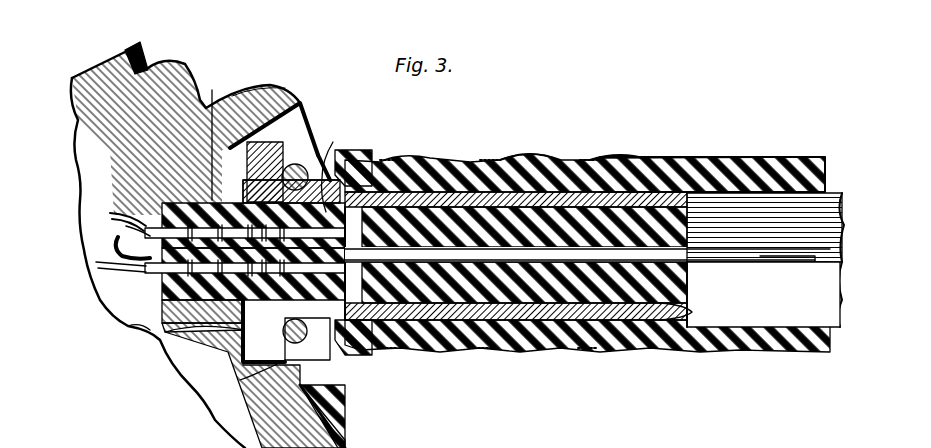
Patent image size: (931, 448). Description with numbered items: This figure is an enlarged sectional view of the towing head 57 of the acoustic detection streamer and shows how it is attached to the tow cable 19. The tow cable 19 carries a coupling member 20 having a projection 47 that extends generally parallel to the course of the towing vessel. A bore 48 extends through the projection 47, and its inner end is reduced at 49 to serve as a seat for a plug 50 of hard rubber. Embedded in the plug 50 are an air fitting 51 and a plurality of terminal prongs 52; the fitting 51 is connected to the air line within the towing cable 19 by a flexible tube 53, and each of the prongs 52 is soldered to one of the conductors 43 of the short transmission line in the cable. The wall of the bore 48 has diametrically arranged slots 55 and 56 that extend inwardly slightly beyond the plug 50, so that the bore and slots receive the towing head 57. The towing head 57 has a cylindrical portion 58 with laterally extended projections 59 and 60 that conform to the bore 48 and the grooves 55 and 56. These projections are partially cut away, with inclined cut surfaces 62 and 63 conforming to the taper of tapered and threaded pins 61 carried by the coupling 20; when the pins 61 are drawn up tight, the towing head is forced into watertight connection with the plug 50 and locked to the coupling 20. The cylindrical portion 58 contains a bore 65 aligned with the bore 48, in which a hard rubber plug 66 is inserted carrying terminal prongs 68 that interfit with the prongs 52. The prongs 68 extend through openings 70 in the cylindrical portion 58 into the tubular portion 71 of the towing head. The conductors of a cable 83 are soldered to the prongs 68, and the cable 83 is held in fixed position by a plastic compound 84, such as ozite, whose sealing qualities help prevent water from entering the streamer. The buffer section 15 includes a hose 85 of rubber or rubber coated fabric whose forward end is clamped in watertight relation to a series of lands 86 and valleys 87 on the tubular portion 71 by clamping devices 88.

The buffer section 15 is at (652, 355).
The tow cable 19 is at (157, 49).
The coupling member 20 is at (184, 72).
The conductors 43 is at (133, 217).
The projection 47 is at (268, 100).
The bore 48 is at (215, 132).
The reduced inner end 49 is at (162, 208).
The plug 50 is at (162, 300).
The air fitting 51 is at (150, 245).
The terminal prongs 52 is at (152, 280).
The flexible tube 53 is at (118, 238).
The slot 55 is at (312, 140).
The slot 56 is at (342, 356).
The towing head 57 is at (700, 316).
The cylindrical portion 58 is at (348, 158).
The projection 59 is at (290, 112).
The projection 60 is at (262, 332).
The tapered and threaded pins 61 is at (320, 152).
The cut surface 62 is at (272, 146).
The cut surface 63 is at (304, 250).
The bore 65 is at (238, 312).
The plug 66 is at (158, 332).
The terminal prongs 68 is at (376, 162).
The openings 70 is at (587, 255).
The tubular portion 71 is at (596, 160).
The cable 83 is at (775, 262).
The plastic compound 84 is at (690, 276).
The hose 85 is at (765, 157).
The lands 86 is at (520, 172).
The valleys 87 is at (552, 160).
The clamping devices 88 is at (390, 350).